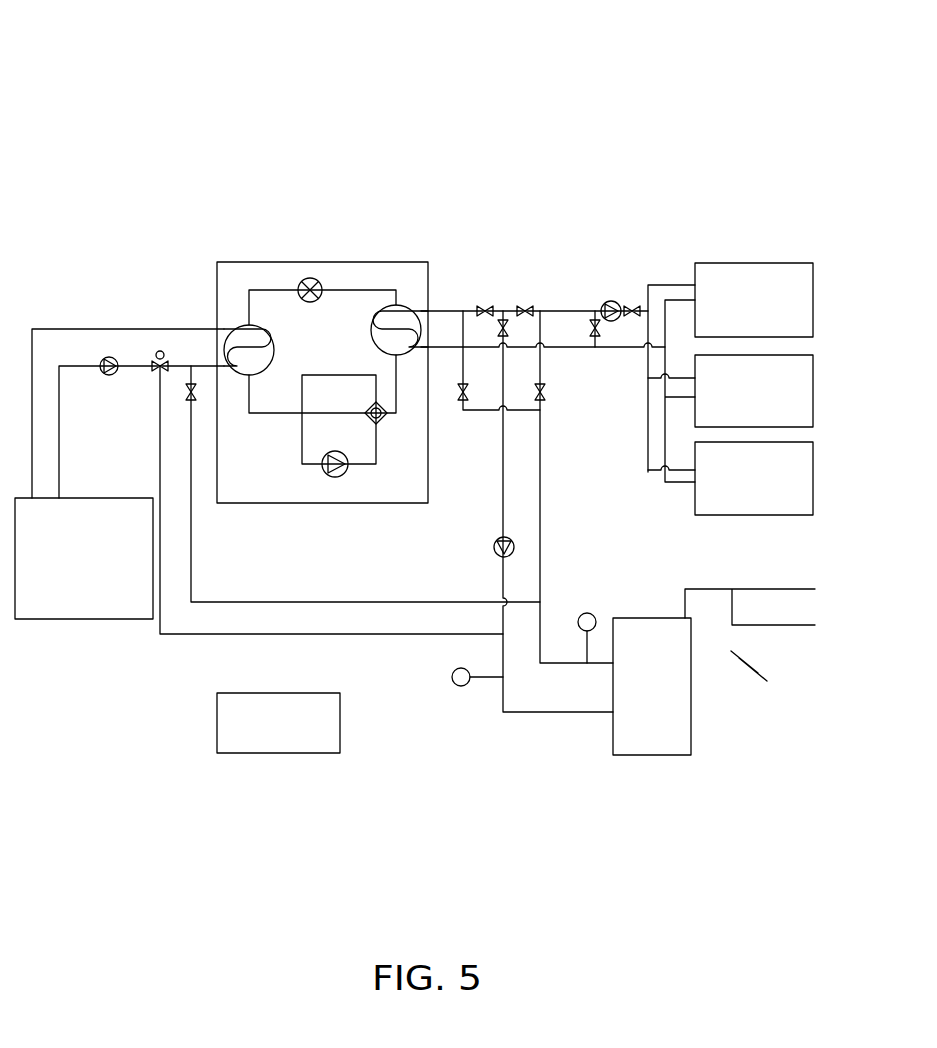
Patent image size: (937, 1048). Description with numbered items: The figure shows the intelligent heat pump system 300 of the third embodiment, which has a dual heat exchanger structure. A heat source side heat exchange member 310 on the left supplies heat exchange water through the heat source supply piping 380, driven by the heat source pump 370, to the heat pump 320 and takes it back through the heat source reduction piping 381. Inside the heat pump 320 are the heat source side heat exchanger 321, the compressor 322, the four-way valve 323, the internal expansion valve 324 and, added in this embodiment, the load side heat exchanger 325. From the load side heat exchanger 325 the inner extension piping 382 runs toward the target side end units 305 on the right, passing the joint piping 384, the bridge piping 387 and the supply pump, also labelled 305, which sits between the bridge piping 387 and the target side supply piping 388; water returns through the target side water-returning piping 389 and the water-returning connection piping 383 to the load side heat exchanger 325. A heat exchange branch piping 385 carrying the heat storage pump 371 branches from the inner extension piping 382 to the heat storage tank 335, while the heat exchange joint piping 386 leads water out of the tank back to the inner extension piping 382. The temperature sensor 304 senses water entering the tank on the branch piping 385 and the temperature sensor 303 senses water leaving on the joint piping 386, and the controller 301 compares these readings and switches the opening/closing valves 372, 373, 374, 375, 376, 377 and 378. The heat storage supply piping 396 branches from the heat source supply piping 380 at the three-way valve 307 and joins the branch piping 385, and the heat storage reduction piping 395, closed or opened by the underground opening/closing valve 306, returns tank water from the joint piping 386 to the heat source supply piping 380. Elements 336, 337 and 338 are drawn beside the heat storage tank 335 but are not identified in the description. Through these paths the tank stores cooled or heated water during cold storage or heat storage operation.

The intelligent heat pump system 300 is at (735, 45).
The controller 301 is at (288, 742).
The temperature sensor 303 is at (587, 613).
The temperature sensor 304 is at (461, 686).
The target side end unit 305 is at (632, 300).
The underground opening/closing valve 306 is at (191, 480).
The three-way valve 307 is at (160, 351).
The heat source side heat exchange member 310 is at (97, 609).
The heat pump 320 is at (378, 75).
The heat source side heat exchanger 321 is at (217, 285).
The compressor 322 is at (243, 327).
The four-way valve 323 is at (372, 405).
The internal expansion valve 324 is at (305, 278).
The load side heat exchanger 325 is at (393, 305).
The heat storage tank 335 is at (640, 742).
The pipe 336 is at (773, 588).
The pipe 337 is at (790, 628).
The connection 338 is at (777, 628).
The heat source pump 370 is at (108, 375).
The heat storage pump 371 is at (500, 541).
The opening/closing valve 372 is at (477, 310).
The opening/closing valve 373 is at (540, 340).
The opening/closing valve 374 is at (505, 340).
The opening/closing valve 375 is at (620, 300).
The opening/closing valve 376 is at (603, 333).
The opening/closing valve 377 is at (445, 350).
The opening/closing valve 378 is at (541, 403).
The heat source supply piping 380 is at (75, 365).
The heat source reduction piping 381 is at (40, 328).
The inner extension piping 382 is at (442, 308).
The water-returning connection piping 383 is at (462, 365).
The joint piping 384 is at (466, 345).
The heat exchange branch piping 385 is at (492, 333).
The heat exchange joint piping 386 is at (588, 310).
The bridge piping 387 is at (613, 299).
The target side supply piping 388 is at (667, 285).
The target side water-returning piping 389 is at (680, 482).
The heat storage reduction piping 395 is at (333, 602).
The heat storage supply piping 396 is at (402, 634).